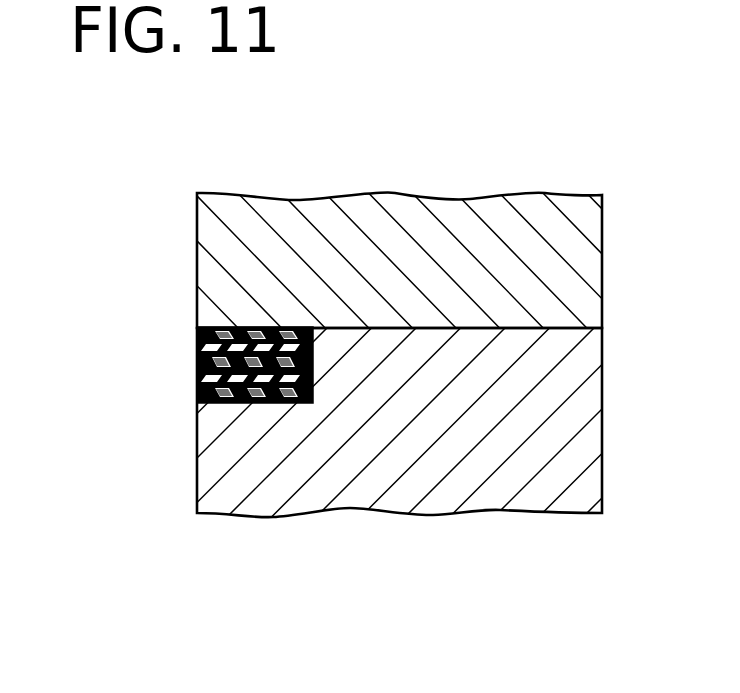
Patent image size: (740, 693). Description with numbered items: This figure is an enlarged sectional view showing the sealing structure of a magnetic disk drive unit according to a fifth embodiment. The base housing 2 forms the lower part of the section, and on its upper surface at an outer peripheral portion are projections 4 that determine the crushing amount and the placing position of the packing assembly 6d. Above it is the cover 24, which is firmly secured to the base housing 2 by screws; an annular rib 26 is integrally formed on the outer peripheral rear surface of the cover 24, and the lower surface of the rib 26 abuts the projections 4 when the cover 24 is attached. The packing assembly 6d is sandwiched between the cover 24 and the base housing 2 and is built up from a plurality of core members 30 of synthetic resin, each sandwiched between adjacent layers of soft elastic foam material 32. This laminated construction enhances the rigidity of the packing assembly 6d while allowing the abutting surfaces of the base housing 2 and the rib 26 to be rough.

The cover 24 is at (396, 188).
The annular rib 26 is at (488, 213).
The base housing 2 is at (390, 519).
The projections 4 is at (473, 503).
The core member 30 is at (197, 347).
The foam material 32 is at (262, 330).
The packing assembly 6d is at (193, 397).